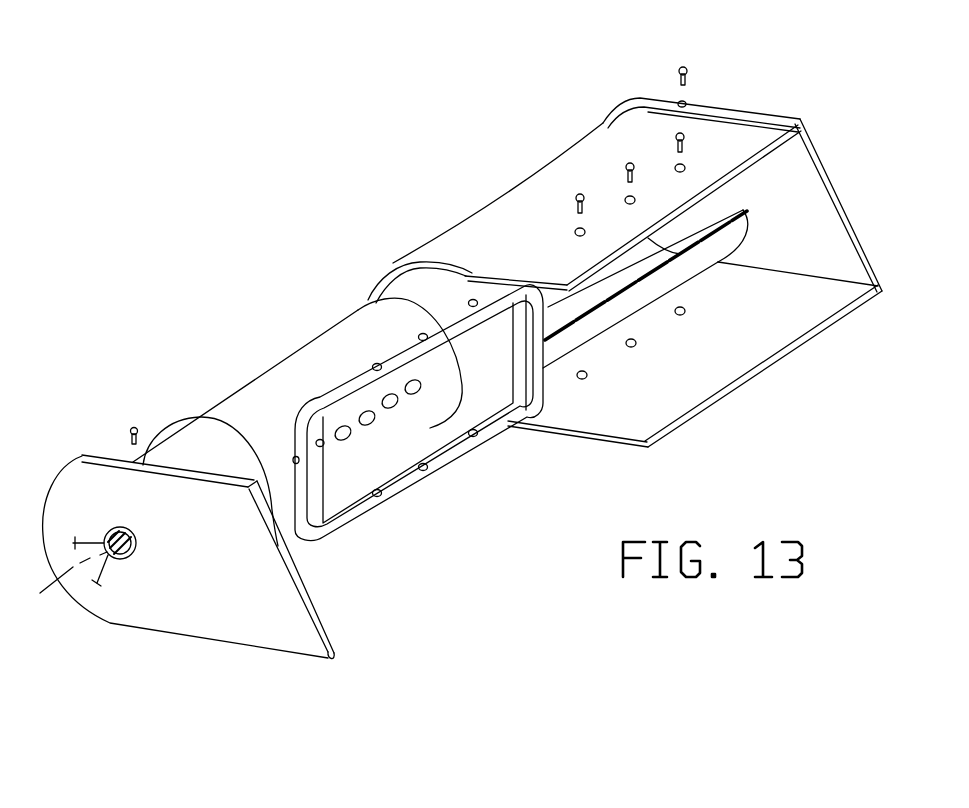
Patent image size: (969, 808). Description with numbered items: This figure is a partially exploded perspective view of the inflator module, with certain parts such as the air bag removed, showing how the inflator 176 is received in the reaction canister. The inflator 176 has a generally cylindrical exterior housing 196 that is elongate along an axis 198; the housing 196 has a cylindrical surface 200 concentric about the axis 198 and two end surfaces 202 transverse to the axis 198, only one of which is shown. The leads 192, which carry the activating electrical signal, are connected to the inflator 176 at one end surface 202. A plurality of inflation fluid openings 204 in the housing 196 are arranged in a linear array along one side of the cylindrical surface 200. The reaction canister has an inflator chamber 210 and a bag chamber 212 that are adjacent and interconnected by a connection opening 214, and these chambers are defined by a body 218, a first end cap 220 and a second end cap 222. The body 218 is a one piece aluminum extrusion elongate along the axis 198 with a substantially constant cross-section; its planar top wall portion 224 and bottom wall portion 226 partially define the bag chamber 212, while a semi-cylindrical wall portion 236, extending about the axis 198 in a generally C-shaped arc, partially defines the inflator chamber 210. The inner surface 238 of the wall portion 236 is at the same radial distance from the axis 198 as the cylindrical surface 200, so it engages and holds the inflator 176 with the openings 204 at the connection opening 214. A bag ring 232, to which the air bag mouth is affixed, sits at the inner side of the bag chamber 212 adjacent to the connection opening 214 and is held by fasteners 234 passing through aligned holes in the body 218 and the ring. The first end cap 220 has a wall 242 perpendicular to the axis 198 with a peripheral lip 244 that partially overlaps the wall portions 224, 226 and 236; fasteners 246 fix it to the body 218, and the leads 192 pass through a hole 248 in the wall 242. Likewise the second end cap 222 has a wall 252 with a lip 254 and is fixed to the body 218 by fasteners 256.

The inflator 176 is at (279, 296).
The leads 192 is at (98, 541).
The exterior housing 196 is at (284, 347).
The axis 198 is at (43, 592).
The cylindrical surface 200 is at (250, 385).
The end surfaces 202 is at (197, 440).
The inflation fluid openings 204 is at (391, 407).
The inflator chamber 210 is at (413, 288).
The bag chamber 212 is at (617, 378).
The connection opening 214 is at (745, 196).
The body 218 is at (490, 198).
The first end cap 220 is at (99, 464).
The second end cap 222 is at (829, 159).
The top wall portion 224 is at (740, 137).
The bottom wall portion 226 is at (765, 357).
The bag ring 232 is at (367, 514).
The fasteners 234 is at (630, 162).
The semi-cylindrical wall portion 236 is at (390, 266).
The inner surface 238 is at (380, 283).
The wall 242 is at (272, 588).
The lip 244 is at (218, 479).
The fasteners 246 is at (133, 427).
The hole 248 is at (137, 543).
The wall 252 is at (836, 222).
The lip 254 is at (773, 120).
The fasteners 256 is at (683, 66).